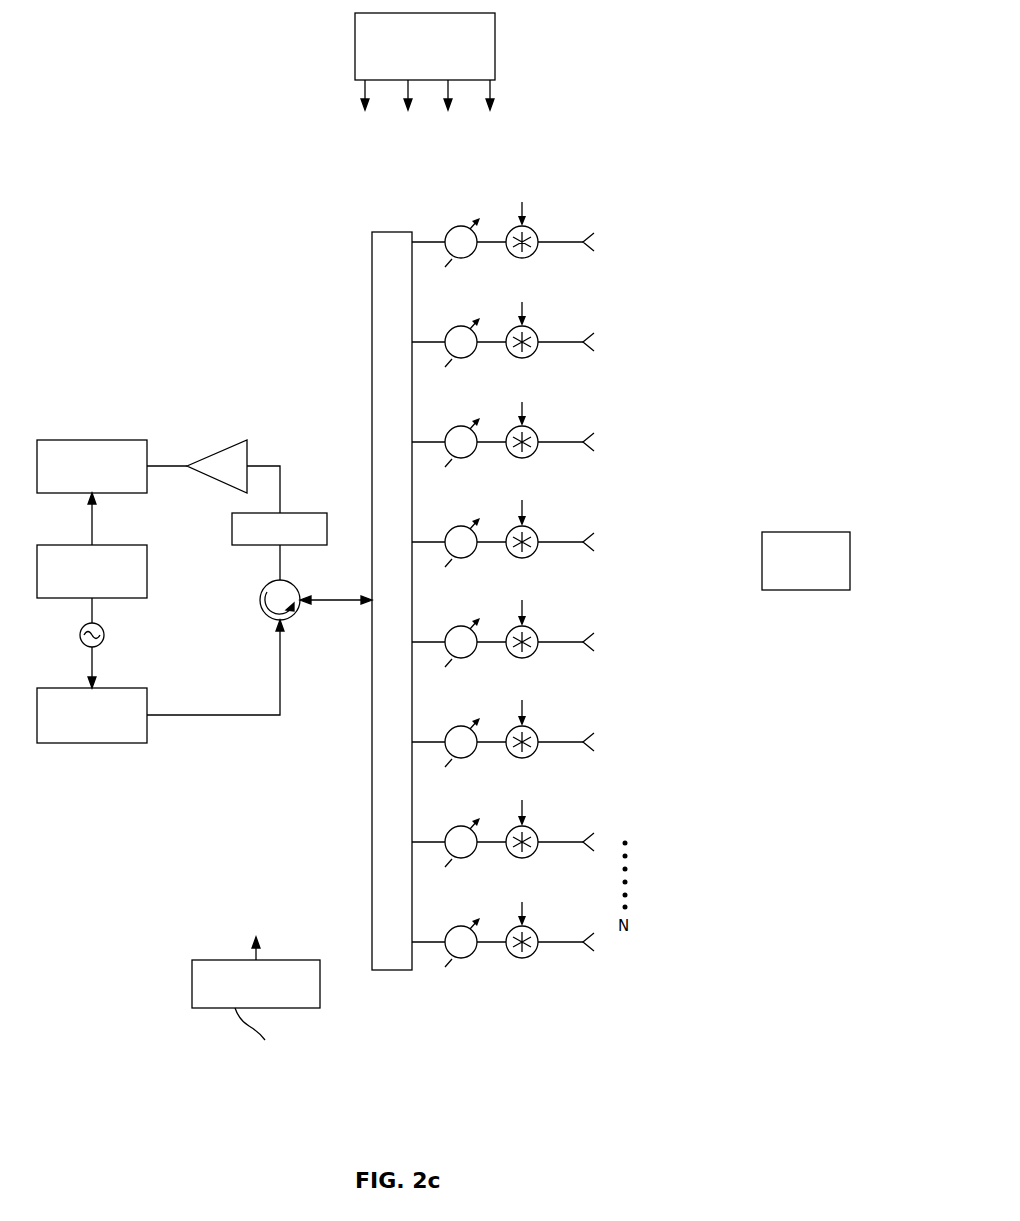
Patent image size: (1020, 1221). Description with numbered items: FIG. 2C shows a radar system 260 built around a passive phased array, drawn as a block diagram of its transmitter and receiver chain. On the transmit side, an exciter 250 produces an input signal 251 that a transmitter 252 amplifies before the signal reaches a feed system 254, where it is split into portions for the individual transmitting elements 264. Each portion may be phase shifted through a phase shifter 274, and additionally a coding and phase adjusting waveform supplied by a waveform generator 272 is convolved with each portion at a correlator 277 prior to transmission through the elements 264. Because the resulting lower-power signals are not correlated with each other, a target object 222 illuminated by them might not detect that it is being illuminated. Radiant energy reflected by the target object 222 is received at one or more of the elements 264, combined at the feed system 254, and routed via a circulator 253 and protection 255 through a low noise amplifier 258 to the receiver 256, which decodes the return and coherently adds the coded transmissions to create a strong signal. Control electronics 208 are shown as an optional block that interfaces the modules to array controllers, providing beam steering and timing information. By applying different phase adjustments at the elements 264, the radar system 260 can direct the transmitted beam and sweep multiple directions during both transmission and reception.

The waveform generator 272 is at (496, 41).
The feed system 254 is at (372, 333).
The phase shifters 274 is at (455, 975).
The correlators 277 is at (520, 975).
The individual transmitting elements 264 is at (626, 328).
The target object 222 is at (834, 532).
The receiver 256 is at (75, 440).
The low noise amplifier 258 is at (231, 442).
The protection 255 is at (320, 513).
The circulator 253 is at (263, 611).
The exciter 250 is at (147, 582).
The input signal 251 is at (104, 636).
The transmitter 252 is at (57, 745).
The control electronics 208 is at (192, 990).
The radar system 260 is at (686, 1040).